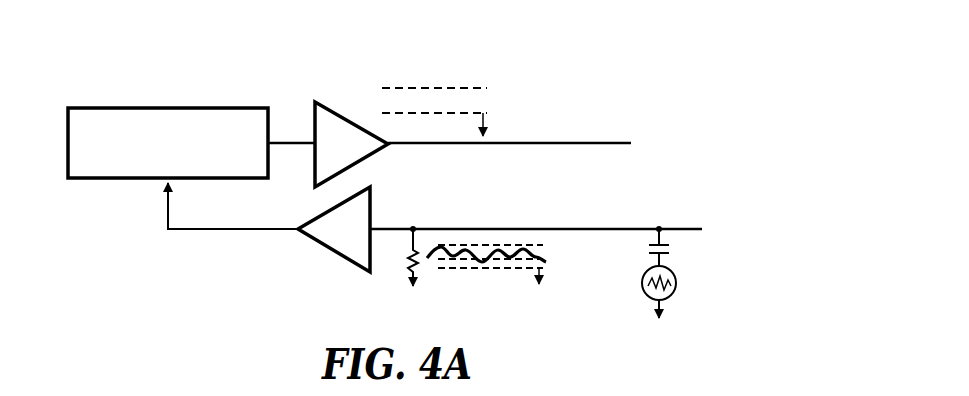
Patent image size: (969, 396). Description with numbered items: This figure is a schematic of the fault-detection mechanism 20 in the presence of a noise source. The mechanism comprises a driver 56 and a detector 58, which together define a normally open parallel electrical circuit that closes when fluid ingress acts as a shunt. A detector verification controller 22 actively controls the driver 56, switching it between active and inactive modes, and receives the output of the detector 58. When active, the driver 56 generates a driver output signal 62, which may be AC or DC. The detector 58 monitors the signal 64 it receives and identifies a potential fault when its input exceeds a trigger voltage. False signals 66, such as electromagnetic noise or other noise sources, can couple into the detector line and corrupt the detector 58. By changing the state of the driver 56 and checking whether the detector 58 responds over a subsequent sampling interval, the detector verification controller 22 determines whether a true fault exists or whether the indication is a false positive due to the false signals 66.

The fault-detection mechanism 20 is at (153, 66).
The detector verification controller 22 is at (168, 143).
The driver 56 is at (328, 144).
The detector 58 is at (269, 227).
The driver output signal 62 is at (608, 144).
The signal received by the detector 64 is at (595, 229).
The false signals 66 is at (677, 288).